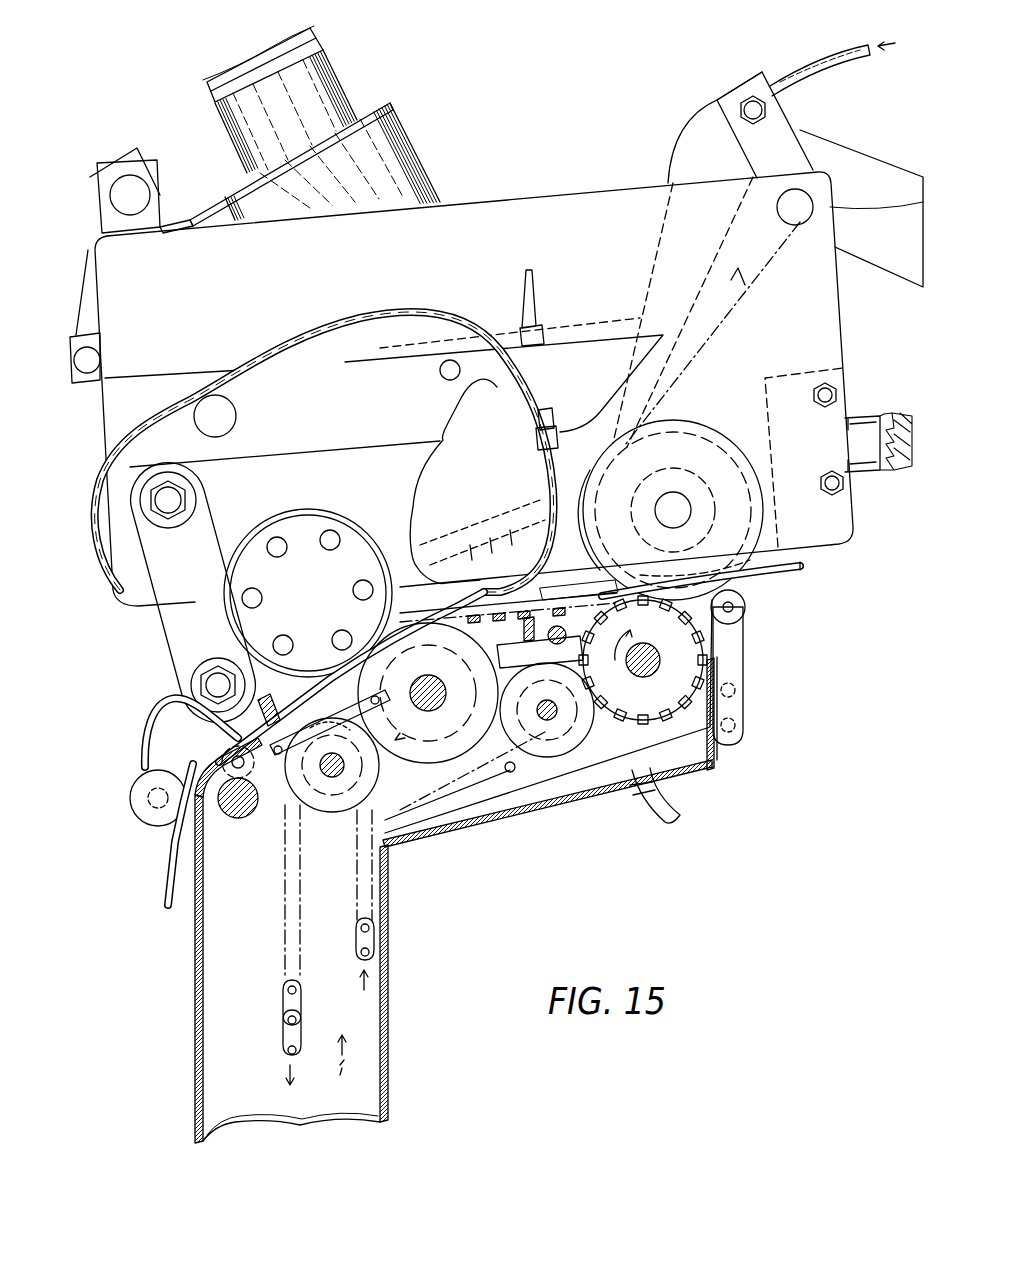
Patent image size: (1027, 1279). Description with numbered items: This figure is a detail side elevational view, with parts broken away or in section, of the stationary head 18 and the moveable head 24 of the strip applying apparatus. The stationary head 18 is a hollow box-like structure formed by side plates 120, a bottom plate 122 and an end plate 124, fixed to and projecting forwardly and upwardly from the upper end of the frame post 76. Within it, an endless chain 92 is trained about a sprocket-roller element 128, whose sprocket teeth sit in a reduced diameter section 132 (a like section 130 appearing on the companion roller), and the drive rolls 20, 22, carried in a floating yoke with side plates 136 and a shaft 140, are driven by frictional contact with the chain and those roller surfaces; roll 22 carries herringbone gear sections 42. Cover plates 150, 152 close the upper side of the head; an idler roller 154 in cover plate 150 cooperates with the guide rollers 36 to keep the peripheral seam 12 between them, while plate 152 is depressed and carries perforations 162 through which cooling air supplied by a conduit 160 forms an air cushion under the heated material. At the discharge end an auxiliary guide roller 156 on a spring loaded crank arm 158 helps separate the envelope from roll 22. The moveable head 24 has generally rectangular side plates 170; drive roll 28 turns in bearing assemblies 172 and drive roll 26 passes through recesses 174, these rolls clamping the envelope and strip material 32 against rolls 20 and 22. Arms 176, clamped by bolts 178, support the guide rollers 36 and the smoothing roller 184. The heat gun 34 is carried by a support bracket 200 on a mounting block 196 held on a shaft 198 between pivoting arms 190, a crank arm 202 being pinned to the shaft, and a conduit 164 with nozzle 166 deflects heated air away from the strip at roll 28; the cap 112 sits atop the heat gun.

The peripheral seam 12 is at (168, 878).
The stationary head 18 is at (495, 820).
The drive roll 20 is at (438, 668).
The drive roll 22 is at (676, 700).
The moveable head 24 is at (550, 210).
The drive roll 26 is at (326, 586).
The drive roll 28 is at (705, 565).
The strip material 32 is at (738, 275).
The heat gun 34 is at (418, 142).
The guide rollers 36 is at (220, 735).
The herringbone gear section 42 is at (685, 680).
The frame post 76 is at (388, 1026).
The endless chain 92 is at (358, 915).
The cap 112 is at (215, 85).
The side plates 120 is at (600, 789).
The bottom plate 122 is at (560, 800).
The end plate 124 is at (774, 692).
The sprocket-roller element 128 is at (585, 730).
The reduced diameter section 130 is at (320, 790).
The reduced diameter section 132 is at (540, 680).
The side plates 136 is at (278, 830).
The shaft 140 is at (240, 805).
The cover plate 150 is at (328, 668).
The cover plate 152 is at (578, 600).
The idler roller 154 is at (225, 760).
The auxiliary guide roller 156 is at (748, 612).
The crank arm 158 is at (752, 640).
The conduit 160 is at (682, 825).
The perforations 162 is at (485, 600).
The conduit 164 is at (830, 68).
The nozzle 166 is at (675, 172).
The side plates 170 is at (430, 266).
The bearing assemblies 172 is at (690, 488).
The recesses 174 is at (240, 535).
The arms 176 is at (175, 628).
The bolts 178 is at (165, 502).
The smoothing roller 184 is at (130, 812).
The arms 190 is at (110, 222).
The mounting block 196 is at (140, 158).
The shaft 198 is at (128, 192).
The support bracket 200 is at (225, 197).
The crank arm 202 is at (75, 332).